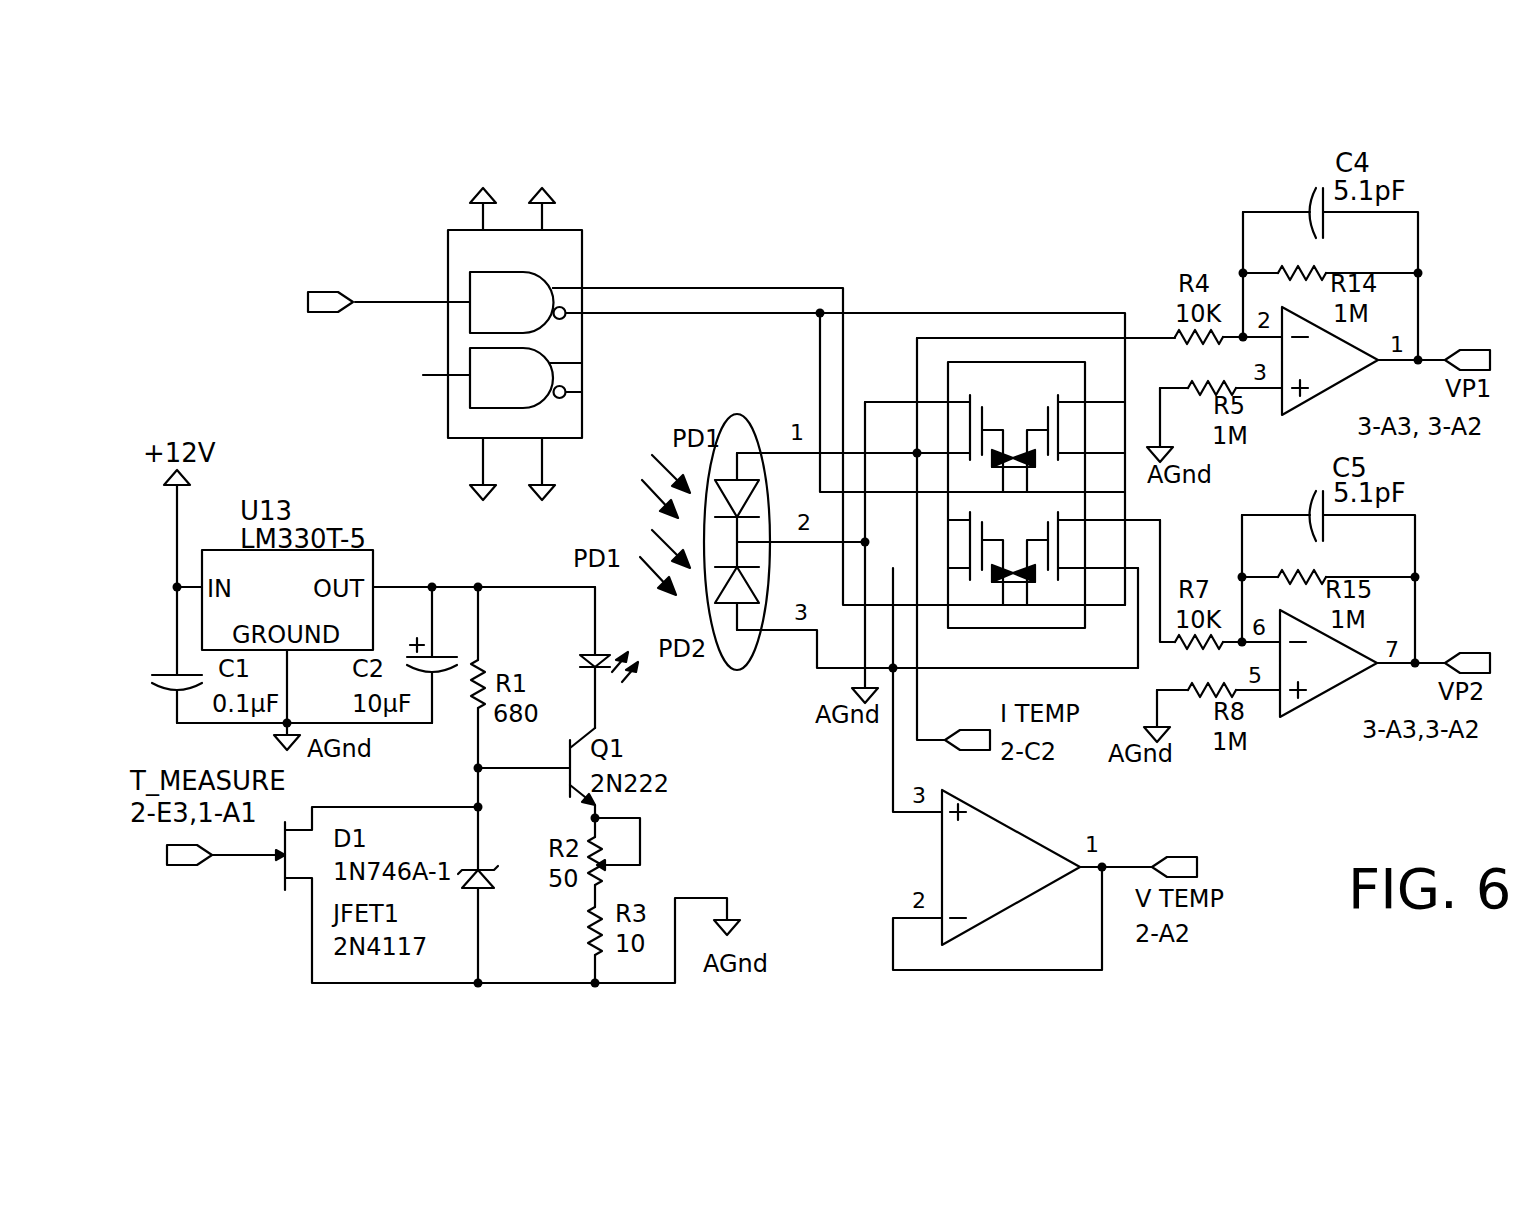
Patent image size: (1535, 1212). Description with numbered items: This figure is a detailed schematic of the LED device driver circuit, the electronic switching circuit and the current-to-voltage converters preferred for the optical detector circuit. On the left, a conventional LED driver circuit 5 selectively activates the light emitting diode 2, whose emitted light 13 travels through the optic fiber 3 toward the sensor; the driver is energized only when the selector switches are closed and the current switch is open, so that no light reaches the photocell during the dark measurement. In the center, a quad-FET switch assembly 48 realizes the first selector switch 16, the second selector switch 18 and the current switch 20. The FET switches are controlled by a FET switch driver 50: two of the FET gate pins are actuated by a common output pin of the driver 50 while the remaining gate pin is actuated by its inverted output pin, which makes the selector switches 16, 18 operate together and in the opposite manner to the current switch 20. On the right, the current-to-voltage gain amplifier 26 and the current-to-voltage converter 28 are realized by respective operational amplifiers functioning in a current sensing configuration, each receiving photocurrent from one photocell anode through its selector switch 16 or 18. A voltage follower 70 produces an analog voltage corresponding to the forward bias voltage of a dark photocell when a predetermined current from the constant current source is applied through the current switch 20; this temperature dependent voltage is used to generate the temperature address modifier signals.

The FET switch driver 50 is at (583, 250).
The quad-FET switch assembly 48 is at (1018, 485).
The first selector switch 16 is at (983, 415).
The current switch 20 is at (973, 583).
The second selector switch 18 is at (1052, 583).
The current-to-voltage gain amplifier 26 is at (1330, 397).
The current-to-voltage converter 28 is at (1330, 702).
The voltage follower 70 is at (922, 845).
The LED driver circuit 5 is at (421, 542).
The light emitting diode 2 is at (592, 652).
The emitted light 13 is at (627, 649).
The optic fiber 3 is at (632, 695).